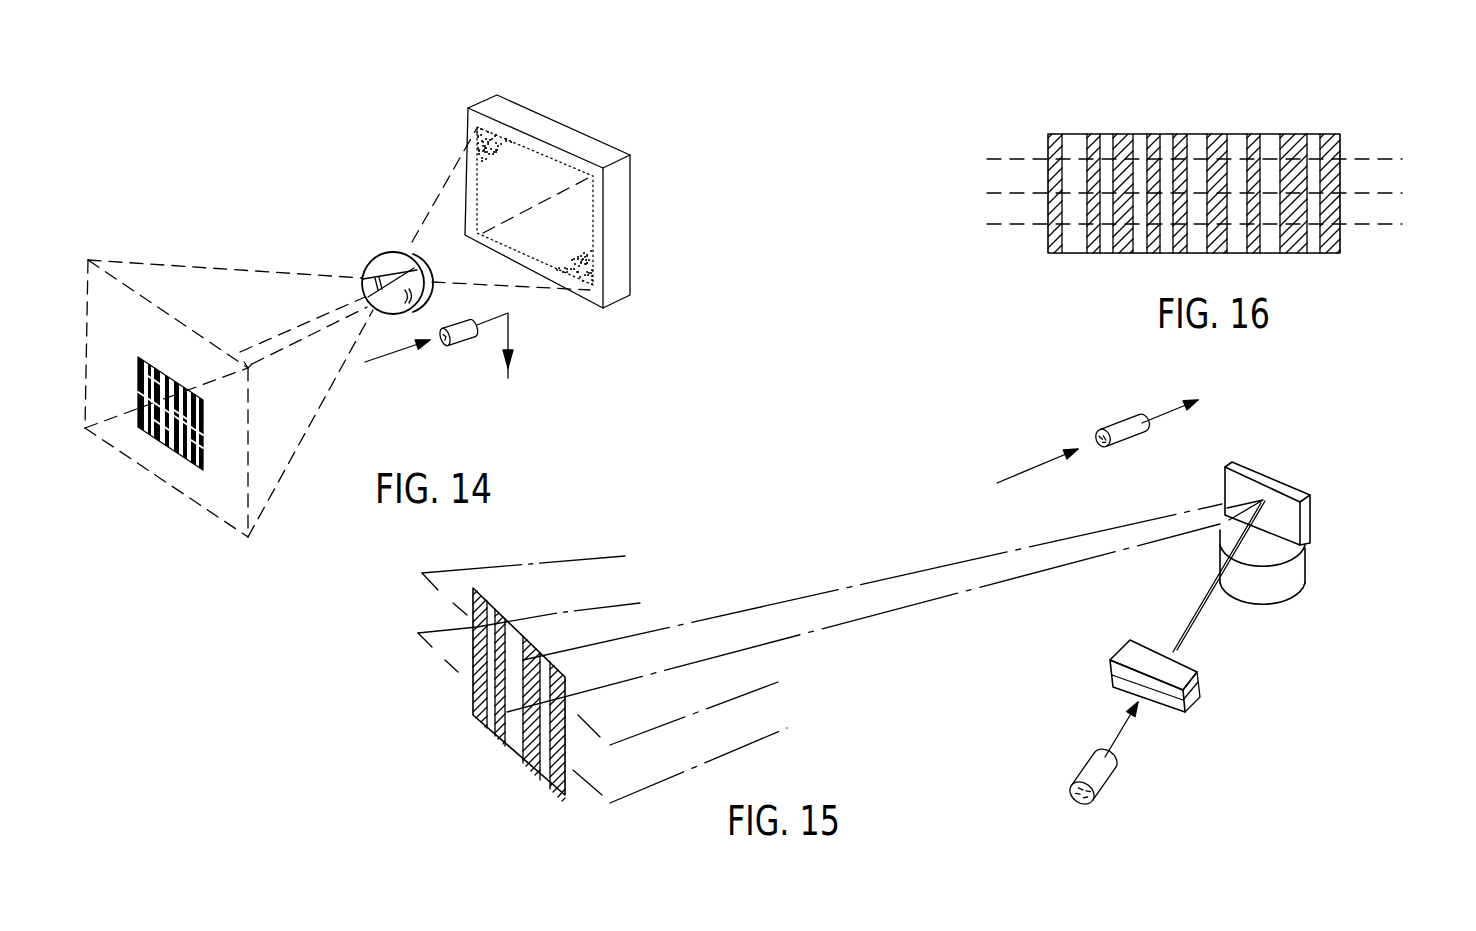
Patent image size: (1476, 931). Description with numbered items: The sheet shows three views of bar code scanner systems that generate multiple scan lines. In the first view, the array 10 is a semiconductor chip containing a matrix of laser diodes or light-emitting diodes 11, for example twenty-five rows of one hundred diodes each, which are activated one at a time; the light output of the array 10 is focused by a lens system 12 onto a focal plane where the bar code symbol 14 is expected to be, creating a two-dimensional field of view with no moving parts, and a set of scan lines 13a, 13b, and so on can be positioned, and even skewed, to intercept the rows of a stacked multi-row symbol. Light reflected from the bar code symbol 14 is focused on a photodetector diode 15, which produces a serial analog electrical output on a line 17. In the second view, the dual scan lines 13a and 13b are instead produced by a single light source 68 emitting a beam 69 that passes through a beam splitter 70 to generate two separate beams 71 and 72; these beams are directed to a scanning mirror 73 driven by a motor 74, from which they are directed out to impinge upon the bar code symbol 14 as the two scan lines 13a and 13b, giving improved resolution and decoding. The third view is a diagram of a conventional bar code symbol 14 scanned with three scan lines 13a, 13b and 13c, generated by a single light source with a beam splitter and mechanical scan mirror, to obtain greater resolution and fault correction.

In FIG. 14, the array 10 is at (580, 296).
In FIG. 14, the laser diodes or LEDs 11 is at (522, 143).
In FIG. 14, the lens system 12 is at (375, 253).
In FIG. 16, the scan line 13a is at (1360, 225).
In FIG. 15, the scan line 13a is at (445, 665).
In FIG. 16, the scan line 13b is at (1387, 193).
In FIG. 15, the scan line 13b is at (440, 593).
In FIG. 16, the scan line 13c is at (1363, 158).
In FIG. 14, the bar code symbol 14 is at (170, 450).
In FIG. 16, the bar code symbol 14 is at (1268, 134).
In FIG. 15, the bar code symbol 14 is at (489, 730).
In FIG. 14, the photodetector diode 15 is at (467, 347).
In FIG. 15, the photodetector diode 15 is at (1118, 425).
In FIG. 14, the line 17 is at (508, 365).
In FIG. 15, the line 17 is at (1150, 424).
In FIG. 15, the light source 68 is at (1100, 777).
In FIG. 15, the beam 69 is at (1122, 733).
In FIG. 15, the beam splitter 70 is at (1200, 706).
In FIG. 15, the beam 71 is at (1215, 600).
In FIG. 15, the beam 72 is at (1203, 615).
In FIG. 15, the scanning mirror 73 is at (1270, 483).
In FIG. 15, the motor 74 is at (1292, 588).